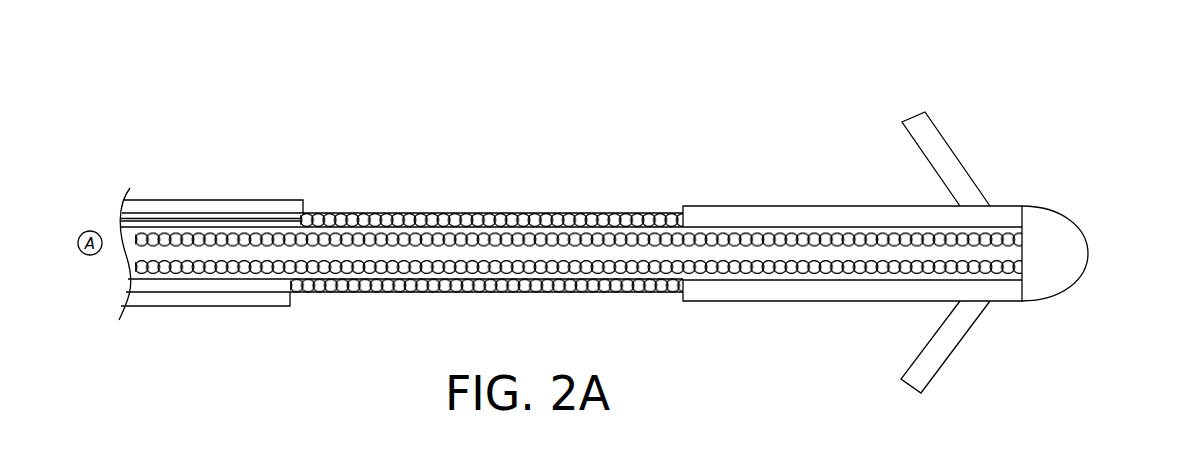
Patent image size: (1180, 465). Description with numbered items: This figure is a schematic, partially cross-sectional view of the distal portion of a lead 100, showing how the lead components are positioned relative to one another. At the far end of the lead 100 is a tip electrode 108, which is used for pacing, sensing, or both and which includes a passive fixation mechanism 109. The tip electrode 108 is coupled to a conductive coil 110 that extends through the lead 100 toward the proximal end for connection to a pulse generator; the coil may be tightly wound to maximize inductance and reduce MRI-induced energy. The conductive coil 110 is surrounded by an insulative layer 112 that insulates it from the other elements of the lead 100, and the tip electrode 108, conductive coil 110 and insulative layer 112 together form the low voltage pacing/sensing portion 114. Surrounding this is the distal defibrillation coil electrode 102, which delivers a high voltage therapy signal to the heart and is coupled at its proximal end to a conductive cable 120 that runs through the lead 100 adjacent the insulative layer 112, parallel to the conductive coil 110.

The lead 100 is at (948, 100).
The distal defibrillation coil electrode 102 is at (493, 213).
The tip electrode 108 is at (1050, 280).
The passive fixation mechanism 109 is at (974, 177).
The conductive coil 110 is at (653, 236).
The insulative layer 112 is at (607, 273).
The low voltage pacing/sensing portion 114 is at (1090, 205).
The conductive cable 120 is at (170, 216).